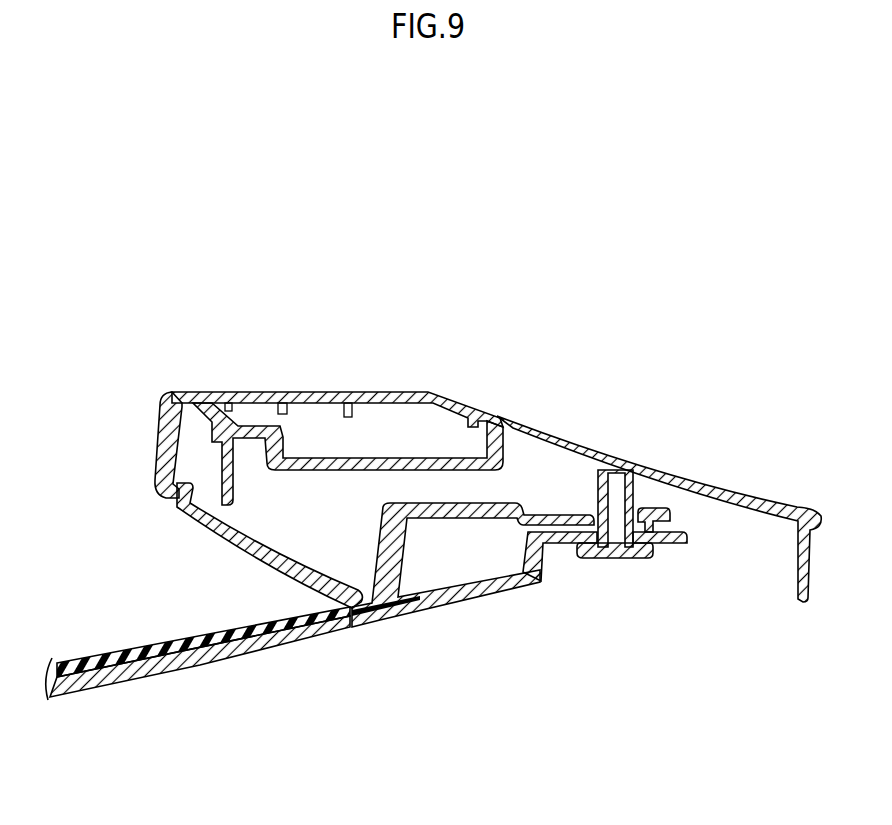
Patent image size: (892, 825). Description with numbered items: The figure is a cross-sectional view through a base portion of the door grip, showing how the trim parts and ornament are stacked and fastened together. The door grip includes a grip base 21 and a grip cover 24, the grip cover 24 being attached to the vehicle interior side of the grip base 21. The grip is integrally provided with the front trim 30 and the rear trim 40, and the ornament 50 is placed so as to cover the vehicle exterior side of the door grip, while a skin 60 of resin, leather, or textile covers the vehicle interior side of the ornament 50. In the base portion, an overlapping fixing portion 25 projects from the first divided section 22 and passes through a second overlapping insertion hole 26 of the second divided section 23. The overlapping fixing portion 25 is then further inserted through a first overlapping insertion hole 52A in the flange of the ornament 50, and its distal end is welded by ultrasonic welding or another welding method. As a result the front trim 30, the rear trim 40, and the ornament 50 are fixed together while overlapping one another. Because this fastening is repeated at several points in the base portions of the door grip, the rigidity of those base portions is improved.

The grip base 21 is at (542, 268).
The first divided section 22 is at (393, 458).
The second divided section 23 is at (498, 517).
The grip cover 24 is at (372, 390).
The overlapping fixing portion 25 is at (613, 557).
The second overlapping insertion hole 26 is at (637, 485).
The front trim 30 is at (729, 490).
The rear trim 40 is at (192, 556).
The ornament 50 is at (118, 690).
The first overlapping insertion hole 52A is at (603, 557).
The skin 60 is at (90, 660).